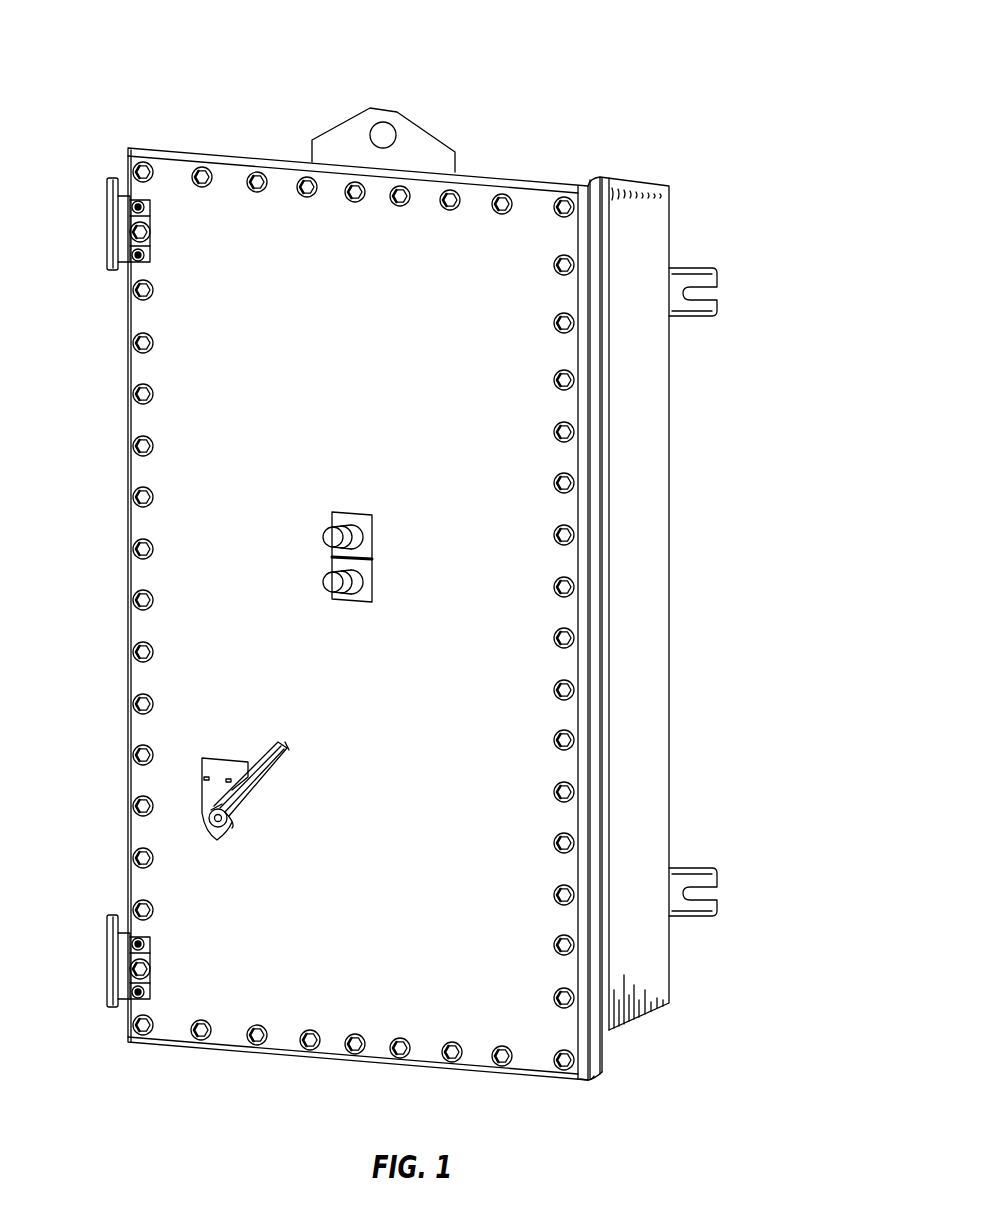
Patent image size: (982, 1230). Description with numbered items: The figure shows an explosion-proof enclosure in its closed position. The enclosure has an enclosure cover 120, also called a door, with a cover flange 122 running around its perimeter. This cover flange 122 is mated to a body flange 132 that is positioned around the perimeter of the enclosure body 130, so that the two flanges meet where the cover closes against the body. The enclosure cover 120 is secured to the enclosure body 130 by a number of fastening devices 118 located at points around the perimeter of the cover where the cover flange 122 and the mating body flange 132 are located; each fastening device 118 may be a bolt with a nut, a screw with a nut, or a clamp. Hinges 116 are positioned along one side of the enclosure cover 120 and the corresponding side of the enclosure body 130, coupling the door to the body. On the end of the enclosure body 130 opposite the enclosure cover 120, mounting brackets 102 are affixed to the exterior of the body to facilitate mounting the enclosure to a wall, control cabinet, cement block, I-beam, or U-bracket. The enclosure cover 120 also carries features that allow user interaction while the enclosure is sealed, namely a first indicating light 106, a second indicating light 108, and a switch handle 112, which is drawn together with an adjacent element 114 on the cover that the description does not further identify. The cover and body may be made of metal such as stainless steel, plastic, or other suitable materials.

The mounting bracket 102 is at (690, 318).
The indicating light 1 106 is at (325, 535).
The indicating light 2 108 is at (325, 581).
The switch handle 112 is at (268, 785).
The handle mounting plate 114 is at (218, 770).
The hinge 116 is at (107, 226).
The fastening device 118 is at (133, 546).
The enclosure cover 120 is at (358, 959).
The cover flange 122 is at (592, 1082).
The enclosure body 130 is at (669, 594).
The body flange 132 is at (604, 1072).